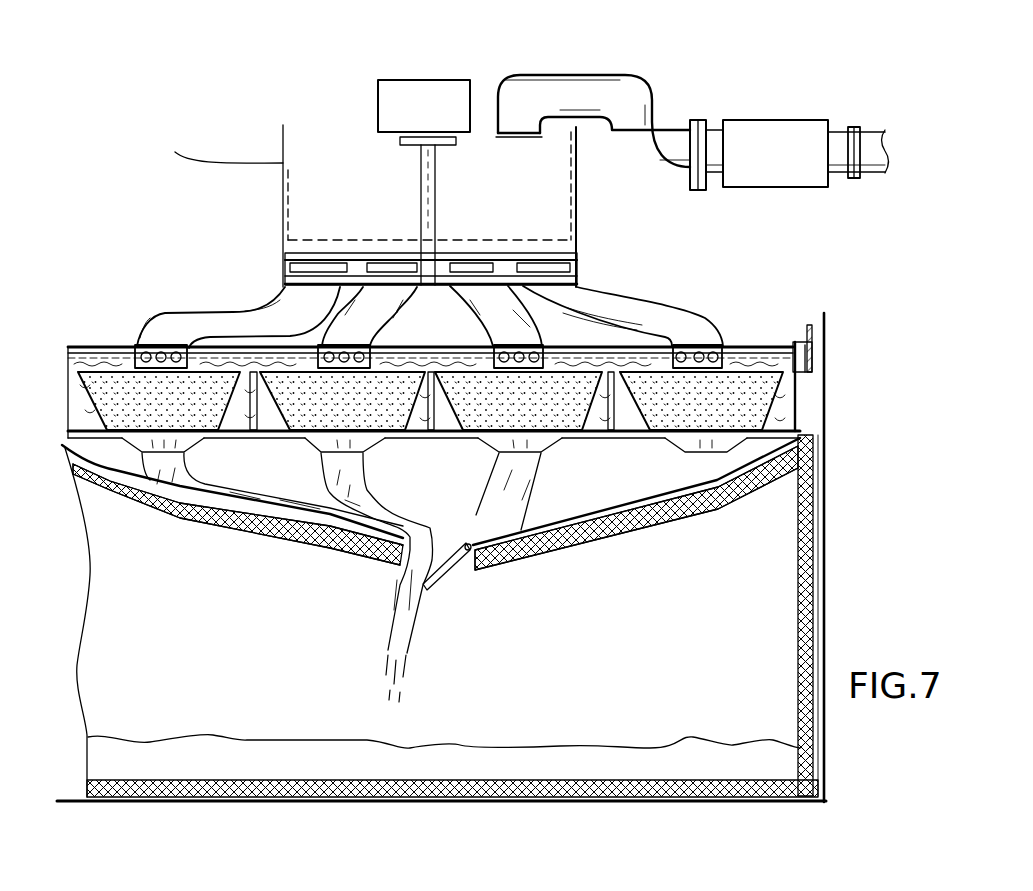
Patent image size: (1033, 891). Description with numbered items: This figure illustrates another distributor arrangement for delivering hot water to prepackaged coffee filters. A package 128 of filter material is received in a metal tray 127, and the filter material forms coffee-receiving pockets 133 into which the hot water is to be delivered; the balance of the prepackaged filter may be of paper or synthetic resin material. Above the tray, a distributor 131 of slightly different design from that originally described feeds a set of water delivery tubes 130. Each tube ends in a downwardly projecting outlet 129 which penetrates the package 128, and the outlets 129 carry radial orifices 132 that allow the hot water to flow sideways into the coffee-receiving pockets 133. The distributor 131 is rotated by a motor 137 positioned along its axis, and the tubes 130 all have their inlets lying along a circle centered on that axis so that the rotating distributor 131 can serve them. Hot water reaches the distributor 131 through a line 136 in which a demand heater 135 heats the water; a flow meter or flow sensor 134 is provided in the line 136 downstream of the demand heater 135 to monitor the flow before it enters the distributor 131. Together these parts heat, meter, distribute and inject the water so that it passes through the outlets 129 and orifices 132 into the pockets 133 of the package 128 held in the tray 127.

The metal tray 127 is at (805, 415).
The package 128 is at (783, 360).
The outlets 129 is at (722, 340).
The water delivery tubes 130 is at (598, 298).
The distributor 131 is at (275, 191).
The radial orifices 132 is at (684, 352).
The coffee-receiving pockets 133 is at (653, 405).
The flow meter or flow sensor 134 is at (697, 120).
The demand heater 135 is at (773, 128).
The line 136 is at (580, 75).
The motor 137 is at (405, 80).